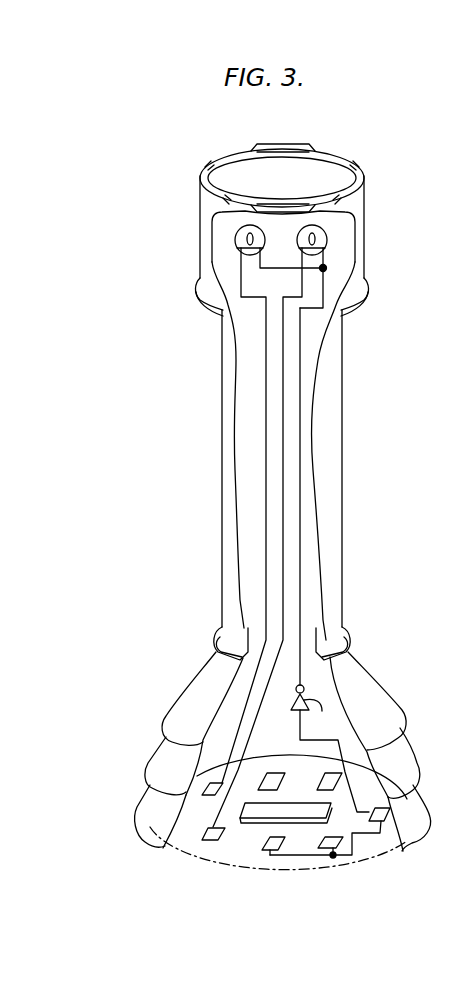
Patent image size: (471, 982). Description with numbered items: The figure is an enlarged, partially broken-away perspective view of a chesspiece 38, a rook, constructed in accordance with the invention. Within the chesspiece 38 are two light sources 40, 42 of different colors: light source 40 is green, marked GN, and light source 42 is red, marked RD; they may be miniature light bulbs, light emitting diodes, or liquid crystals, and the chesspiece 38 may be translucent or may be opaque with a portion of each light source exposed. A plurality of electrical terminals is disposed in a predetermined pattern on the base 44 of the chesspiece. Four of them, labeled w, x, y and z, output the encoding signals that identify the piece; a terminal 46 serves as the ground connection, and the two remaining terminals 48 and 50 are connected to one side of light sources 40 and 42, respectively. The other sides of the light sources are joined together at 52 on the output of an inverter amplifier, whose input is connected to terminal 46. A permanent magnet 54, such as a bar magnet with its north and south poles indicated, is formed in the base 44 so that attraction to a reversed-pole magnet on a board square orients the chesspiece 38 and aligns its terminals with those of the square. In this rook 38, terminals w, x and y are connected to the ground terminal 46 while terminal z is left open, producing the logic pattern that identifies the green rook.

The chesspiece 38 is at (381, 388).
The light source 40 is at (328, 239).
The light source 42 is at (236, 240).
The base 44 is at (237, 861).
The terminal 46 is at (388, 838).
The terminal 48 is at (206, 841).
The terminal 50 is at (203, 790).
The connection point 52 is at (327, 268).
The permanent magnet 54 is at (289, 820).